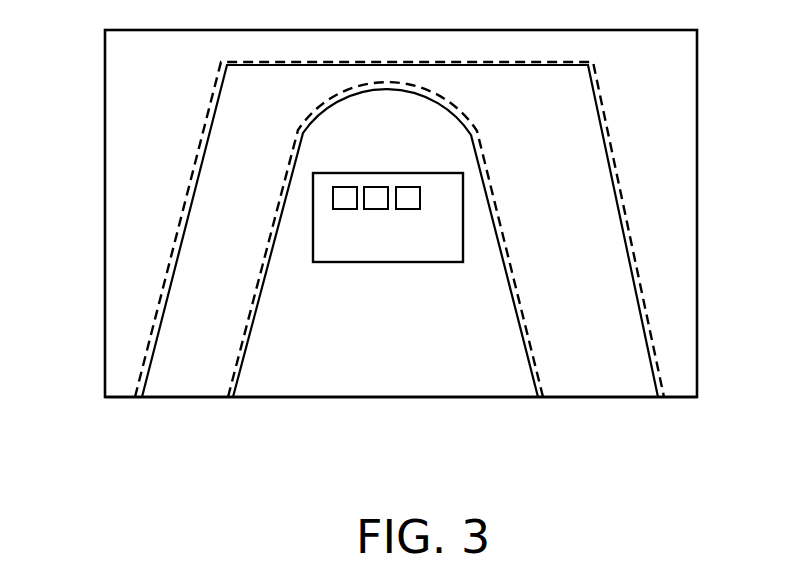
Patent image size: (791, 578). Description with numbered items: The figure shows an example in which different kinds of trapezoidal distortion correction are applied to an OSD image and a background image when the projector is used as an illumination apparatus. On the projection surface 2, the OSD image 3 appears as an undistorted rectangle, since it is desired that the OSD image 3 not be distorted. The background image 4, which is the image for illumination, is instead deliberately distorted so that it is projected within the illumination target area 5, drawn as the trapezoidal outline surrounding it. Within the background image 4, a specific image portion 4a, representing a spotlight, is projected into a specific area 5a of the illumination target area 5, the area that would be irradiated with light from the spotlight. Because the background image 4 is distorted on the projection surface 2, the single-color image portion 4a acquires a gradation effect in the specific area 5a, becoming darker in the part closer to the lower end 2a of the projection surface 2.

The projection surface 2 is at (697, 60).
The lower end of projection surface 2a is at (458, 398).
The OSD image 3 is at (463, 217).
The background image 4 is at (537, 114).
The specific image portion 4a is at (437, 150).
The illumination target area 5 is at (196, 170).
The specific area 5a is at (312, 110).